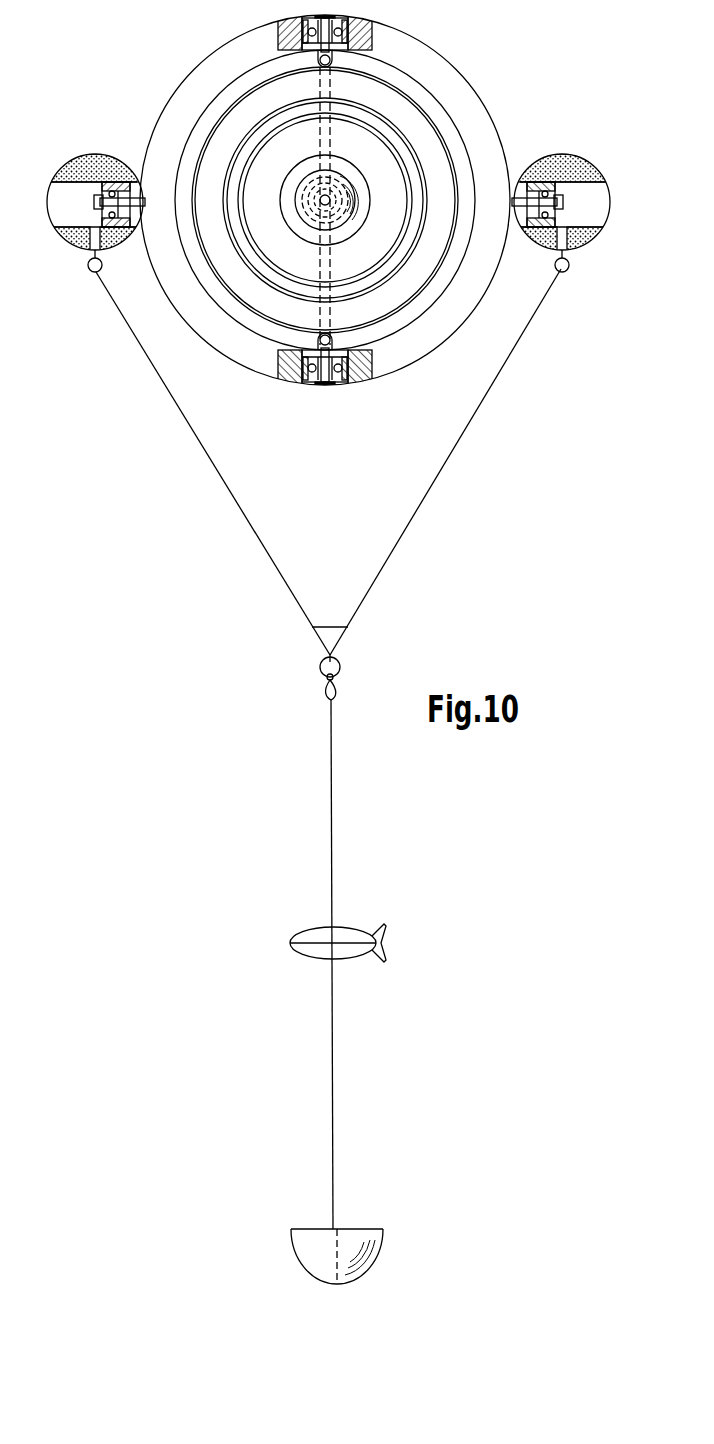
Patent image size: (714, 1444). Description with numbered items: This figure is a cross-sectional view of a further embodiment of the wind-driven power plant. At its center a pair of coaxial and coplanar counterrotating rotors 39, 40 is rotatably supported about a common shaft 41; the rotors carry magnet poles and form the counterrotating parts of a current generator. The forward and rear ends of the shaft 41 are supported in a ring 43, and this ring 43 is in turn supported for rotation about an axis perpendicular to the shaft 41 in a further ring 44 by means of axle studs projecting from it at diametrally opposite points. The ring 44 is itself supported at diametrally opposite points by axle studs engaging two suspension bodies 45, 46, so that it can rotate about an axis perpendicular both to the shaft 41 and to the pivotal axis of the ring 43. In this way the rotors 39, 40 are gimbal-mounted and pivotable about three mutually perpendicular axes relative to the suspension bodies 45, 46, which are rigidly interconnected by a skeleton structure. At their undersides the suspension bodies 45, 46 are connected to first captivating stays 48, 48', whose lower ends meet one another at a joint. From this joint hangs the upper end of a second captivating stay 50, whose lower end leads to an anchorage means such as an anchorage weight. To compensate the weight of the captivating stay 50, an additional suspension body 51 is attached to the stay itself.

The counterrotating rotor 39 is at (450, 148).
The counterrotating rotor 40 is at (392, 268).
The common shaft 41 is at (320, 207).
The ring 43 is at (333, 132).
The ring 44 is at (443, 66).
The suspension body 45 is at (585, 155).
The suspension body 46 is at (85, 157).
The first captivating stay 48 is at (213, 463).
The first captivating stay 48' is at (445, 462).
The second captivating stay 50 is at (334, 787).
The additional suspension body 51 is at (352, 936).